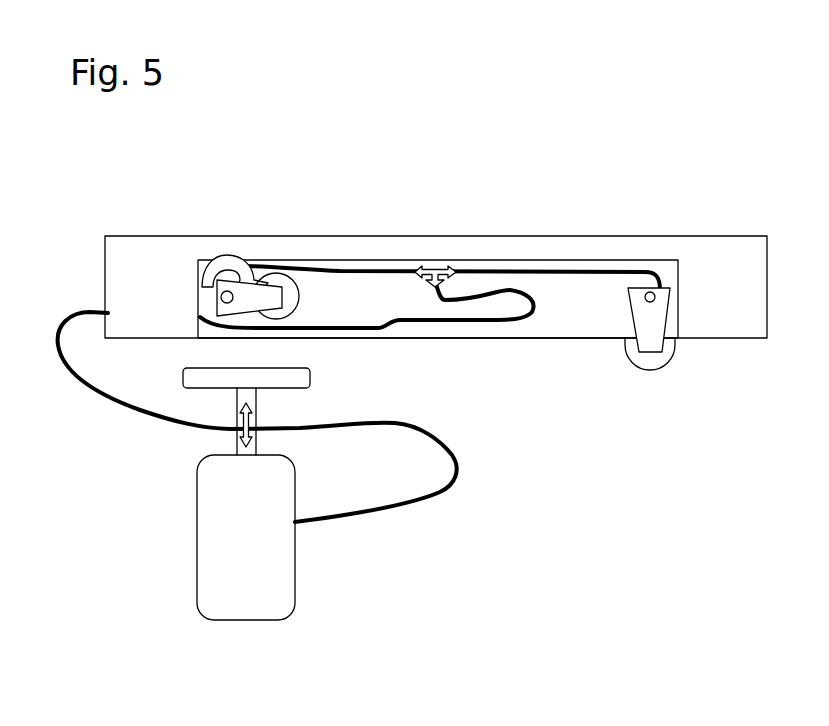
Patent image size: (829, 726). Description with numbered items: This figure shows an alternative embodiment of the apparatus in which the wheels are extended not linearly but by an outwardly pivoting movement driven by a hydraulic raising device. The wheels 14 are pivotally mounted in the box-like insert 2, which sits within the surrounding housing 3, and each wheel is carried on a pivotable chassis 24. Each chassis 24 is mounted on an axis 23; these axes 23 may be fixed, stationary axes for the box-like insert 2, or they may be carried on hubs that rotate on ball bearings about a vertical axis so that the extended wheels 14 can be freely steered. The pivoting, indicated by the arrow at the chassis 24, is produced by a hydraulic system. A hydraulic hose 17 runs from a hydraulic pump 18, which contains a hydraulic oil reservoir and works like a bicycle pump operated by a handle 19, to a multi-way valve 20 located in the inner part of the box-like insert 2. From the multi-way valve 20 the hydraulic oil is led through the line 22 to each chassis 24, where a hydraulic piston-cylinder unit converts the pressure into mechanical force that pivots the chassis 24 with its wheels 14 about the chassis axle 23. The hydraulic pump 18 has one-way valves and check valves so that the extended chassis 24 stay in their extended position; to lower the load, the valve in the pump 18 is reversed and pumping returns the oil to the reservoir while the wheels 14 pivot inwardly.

The box-like insert 2 is at (558, 255).
The housing 3 is at (627, 237).
The wheels 14 is at (297, 298).
The hydraulic hose 17 is at (450, 447).
The hydraulic pump 18 is at (217, 527).
The handle 19 is at (203, 378).
The multi-way valve 20 is at (437, 272).
The cable 22 is at (366, 272).
The axes 23 is at (222, 299).
The pivotable chassis 24 is at (272, 297).